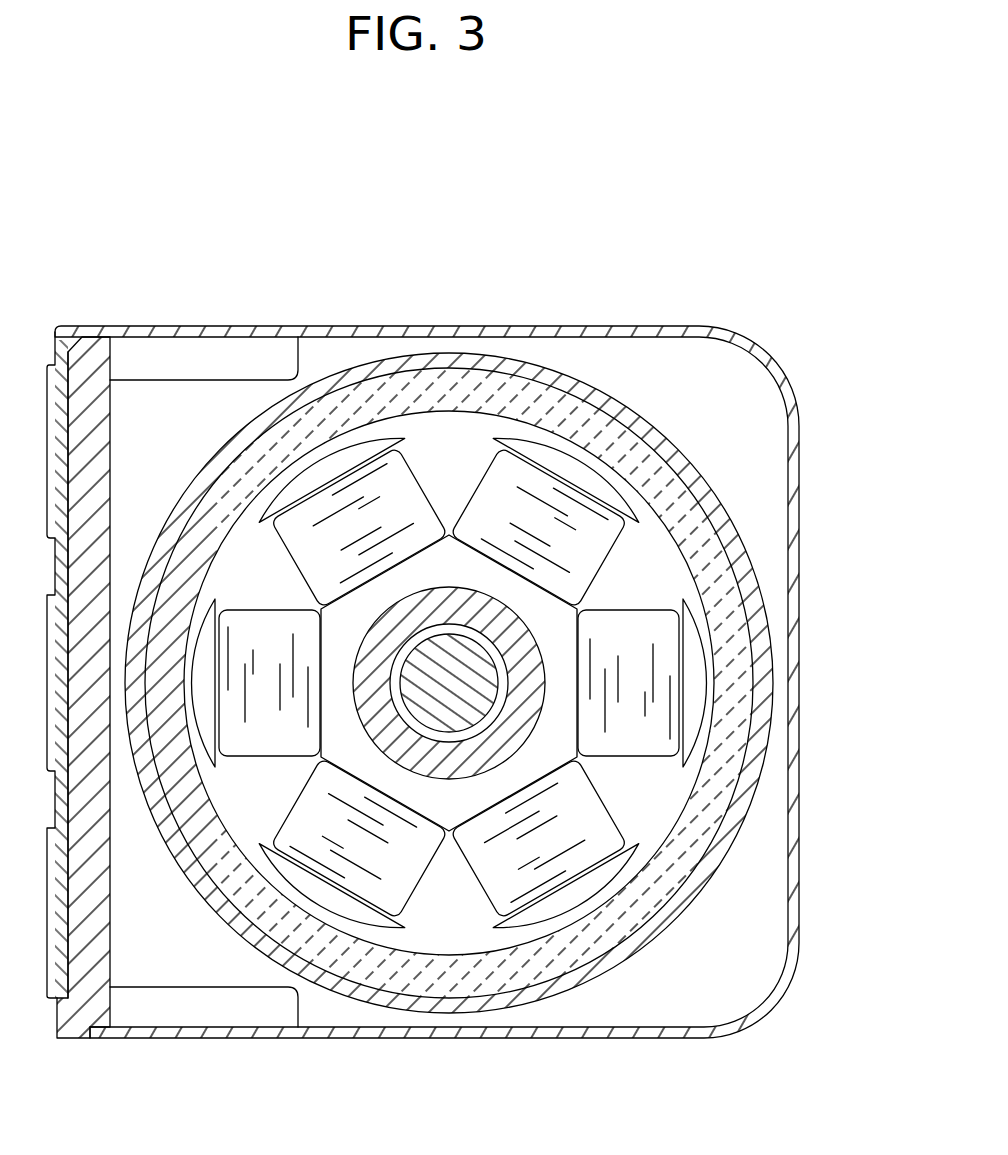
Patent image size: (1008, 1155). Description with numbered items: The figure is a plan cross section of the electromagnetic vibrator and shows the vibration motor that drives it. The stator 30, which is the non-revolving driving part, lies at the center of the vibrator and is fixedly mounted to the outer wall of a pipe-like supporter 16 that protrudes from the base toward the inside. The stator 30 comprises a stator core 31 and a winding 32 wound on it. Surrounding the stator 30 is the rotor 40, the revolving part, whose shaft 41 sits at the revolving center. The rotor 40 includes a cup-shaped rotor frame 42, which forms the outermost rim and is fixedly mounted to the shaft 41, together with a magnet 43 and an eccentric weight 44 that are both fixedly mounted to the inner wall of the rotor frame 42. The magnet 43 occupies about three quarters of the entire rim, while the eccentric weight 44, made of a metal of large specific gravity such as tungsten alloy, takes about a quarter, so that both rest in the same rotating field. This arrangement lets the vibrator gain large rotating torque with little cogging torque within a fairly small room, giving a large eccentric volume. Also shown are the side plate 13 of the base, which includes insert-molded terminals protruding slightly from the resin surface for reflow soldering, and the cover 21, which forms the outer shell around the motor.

The side plate 13 is at (90, 355).
The supporter 16 is at (484, 757).
The cover 21 is at (428, 326).
The stator 30 is at (643, 690).
The stator core 31 is at (327, 900).
The winding 32 is at (400, 877).
The rotor 40 is at (518, 629).
The shaft 41 is at (456, 711).
The rotor frame 42 is at (565, 382).
The magnet 43 is at (640, 453).
The eccentric weight 44 is at (210, 503).